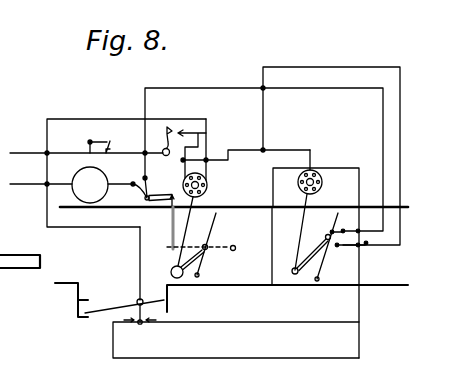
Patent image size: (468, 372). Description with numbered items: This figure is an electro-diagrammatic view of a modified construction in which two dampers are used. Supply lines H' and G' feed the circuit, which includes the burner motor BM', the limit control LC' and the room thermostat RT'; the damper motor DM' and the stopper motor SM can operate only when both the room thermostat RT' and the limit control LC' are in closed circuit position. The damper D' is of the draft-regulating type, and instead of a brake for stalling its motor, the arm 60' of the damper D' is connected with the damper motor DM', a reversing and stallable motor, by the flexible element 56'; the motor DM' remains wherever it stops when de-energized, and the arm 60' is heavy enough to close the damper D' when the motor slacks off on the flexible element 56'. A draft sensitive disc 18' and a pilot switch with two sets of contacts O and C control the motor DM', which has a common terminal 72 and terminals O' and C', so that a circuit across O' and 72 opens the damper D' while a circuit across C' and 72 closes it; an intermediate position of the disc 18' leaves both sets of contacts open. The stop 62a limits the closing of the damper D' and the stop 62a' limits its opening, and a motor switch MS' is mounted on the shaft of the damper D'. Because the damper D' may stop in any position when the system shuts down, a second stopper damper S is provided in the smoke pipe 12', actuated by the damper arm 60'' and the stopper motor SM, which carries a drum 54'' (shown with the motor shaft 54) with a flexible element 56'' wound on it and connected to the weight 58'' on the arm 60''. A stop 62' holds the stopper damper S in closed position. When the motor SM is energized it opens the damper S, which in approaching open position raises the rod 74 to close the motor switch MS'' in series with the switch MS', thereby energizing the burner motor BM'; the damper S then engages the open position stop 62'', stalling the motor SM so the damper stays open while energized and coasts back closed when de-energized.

The supply line H' is at (81, 154).
The supply line G' is at (66, 185).
The burner motor BM' is at (90, 185).
The limit control LC' is at (85, 143).
The room thermostat RT' is at (167, 128).
The motor switch MS'' is at (152, 188).
The stopper motor SM is at (208, 184).
The drum 54'' is at (233, 199).
The damper motor DM' is at (325, 183).
The motor shaft 54 is at (290, 193).
The terminal O' is at (296, 147).
The common terminal 72 is at (314, 171).
The terminal C' is at (236, 247).
The contacts O is at (147, 338).
The draft sensitive disc 18' is at (109, 315).
The flexible element 56'' is at (151, 231).
The rod 74 is at (171, 236).
The damper arm 60'' is at (175, 264).
The stopper damper S is at (208, 246).
The open position stop 62'' is at (246, 249).
The stop 62' is at (220, 274).
The weight 58'' is at (189, 310).
The smoke pipe 12' is at (239, 301).
The motor switch MS' is at (263, 228).
The flexible element 56' is at (293, 232).
The arm 60' is at (308, 280).
The damper D' is at (340, 247).
The stop 62a is at (326, 303).
The stop 62a' is at (381, 257).